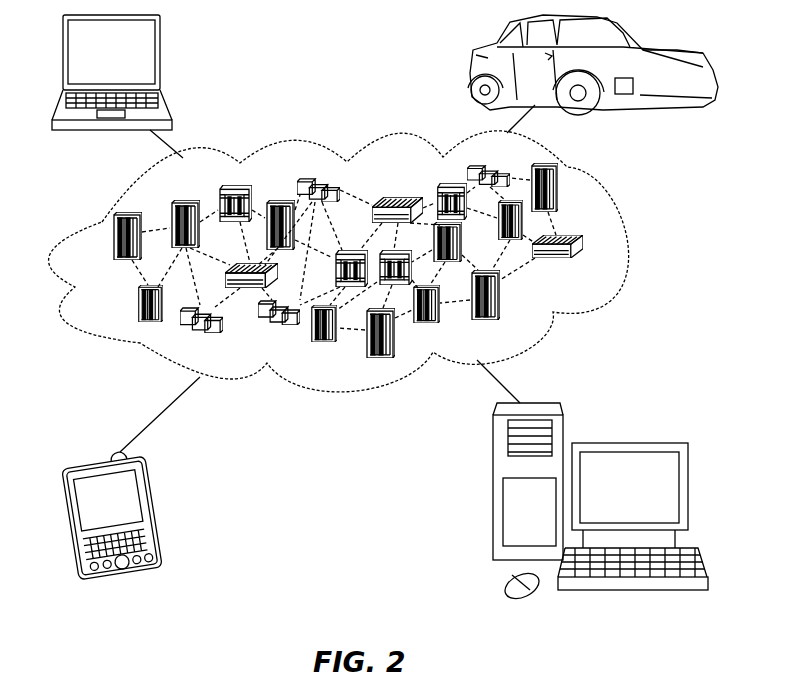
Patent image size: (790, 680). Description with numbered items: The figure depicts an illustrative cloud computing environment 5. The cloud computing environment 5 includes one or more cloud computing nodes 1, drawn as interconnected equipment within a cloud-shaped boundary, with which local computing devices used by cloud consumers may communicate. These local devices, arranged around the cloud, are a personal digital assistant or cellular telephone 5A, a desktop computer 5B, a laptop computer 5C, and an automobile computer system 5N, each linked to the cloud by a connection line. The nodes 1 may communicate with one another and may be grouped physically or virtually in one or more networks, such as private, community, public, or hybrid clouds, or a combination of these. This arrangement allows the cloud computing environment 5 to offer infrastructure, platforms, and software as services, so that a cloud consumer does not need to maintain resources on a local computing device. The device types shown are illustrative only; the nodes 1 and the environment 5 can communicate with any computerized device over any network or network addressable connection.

The cloud computing nodes 1 is at (352, 261).
The cloud computing environment 5 is at (633, 242).
The personal digital assistant or cellular telephone 5A is at (152, 508).
The desktop computer 5B is at (628, 443).
The laptop computer 5C is at (160, 58).
The automobile computer system 5N is at (472, 63).